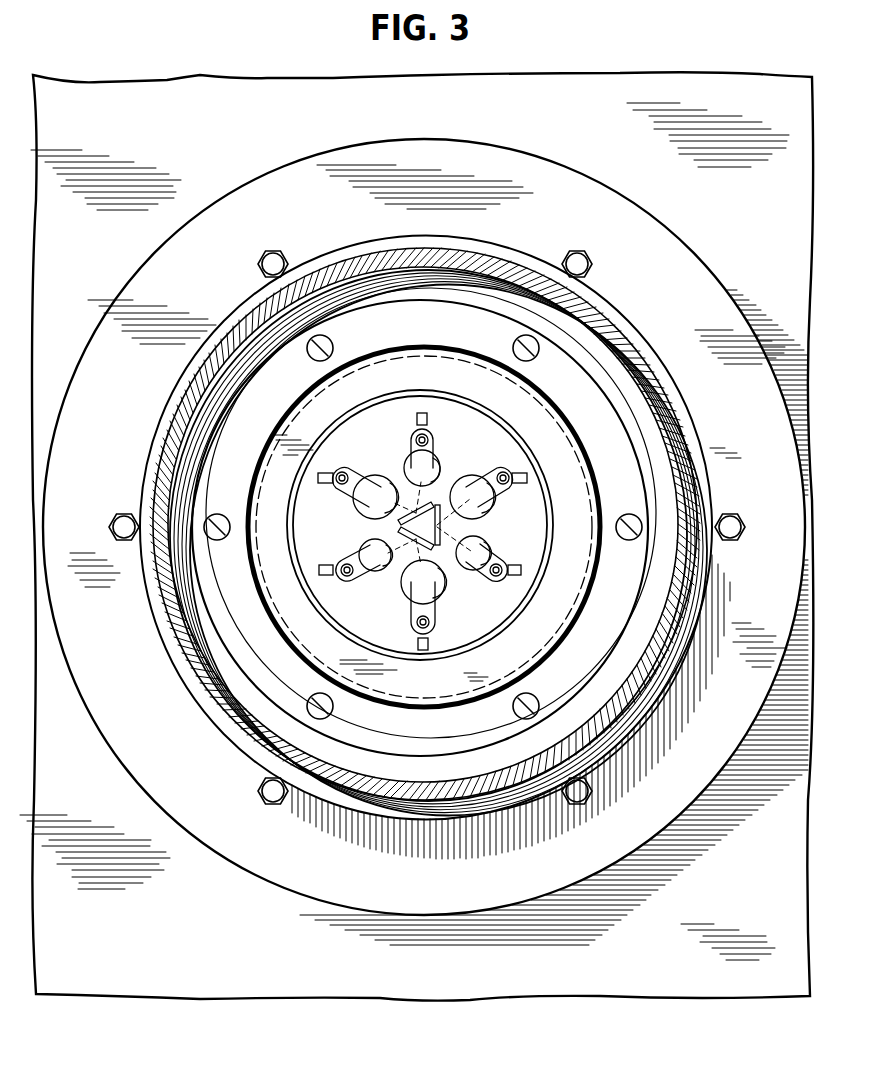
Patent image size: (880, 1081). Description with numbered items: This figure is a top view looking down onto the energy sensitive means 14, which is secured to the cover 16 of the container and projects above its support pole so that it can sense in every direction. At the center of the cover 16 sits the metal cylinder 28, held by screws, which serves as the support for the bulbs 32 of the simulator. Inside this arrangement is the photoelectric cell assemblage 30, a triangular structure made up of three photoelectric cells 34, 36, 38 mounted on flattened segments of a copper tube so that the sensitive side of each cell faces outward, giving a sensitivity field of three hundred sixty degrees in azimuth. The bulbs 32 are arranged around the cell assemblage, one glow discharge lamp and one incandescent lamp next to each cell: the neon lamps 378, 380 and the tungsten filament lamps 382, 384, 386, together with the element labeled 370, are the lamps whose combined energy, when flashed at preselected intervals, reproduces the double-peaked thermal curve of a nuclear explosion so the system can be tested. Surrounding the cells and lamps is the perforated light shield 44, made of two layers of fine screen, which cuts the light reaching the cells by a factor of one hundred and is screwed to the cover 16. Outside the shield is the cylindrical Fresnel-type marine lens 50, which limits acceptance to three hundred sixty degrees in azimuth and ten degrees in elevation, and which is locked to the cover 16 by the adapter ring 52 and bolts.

The energy sensitive means 14 is at (653, 340).
The cover 16 is at (448, 992).
The metal cylinder 28 is at (547, 540).
The photoelectric cell assemblage 30 is at (450, 527).
The bulbs 32 is at (474, 463).
The photoelectric cell 34 is at (425, 505).
The photoelectric cell 36 is at (372, 540).
The photoelectric cell 38 is at (442, 548).
The light shield 44 is at (580, 444).
The cylindrical Fresnel-type marine lens 50 is at (680, 447).
The adapter ring 52 is at (657, 228).
The lamp socket tab 370 is at (382, 571).
The neon lamp 378 is at (485, 578).
The neon lamp 380 is at (409, 470).
The tungsten filament lamp 382 is at (408, 596).
The tungsten filament lamp 384 is at (493, 502).
The tungsten filament lamp 386 is at (357, 503).